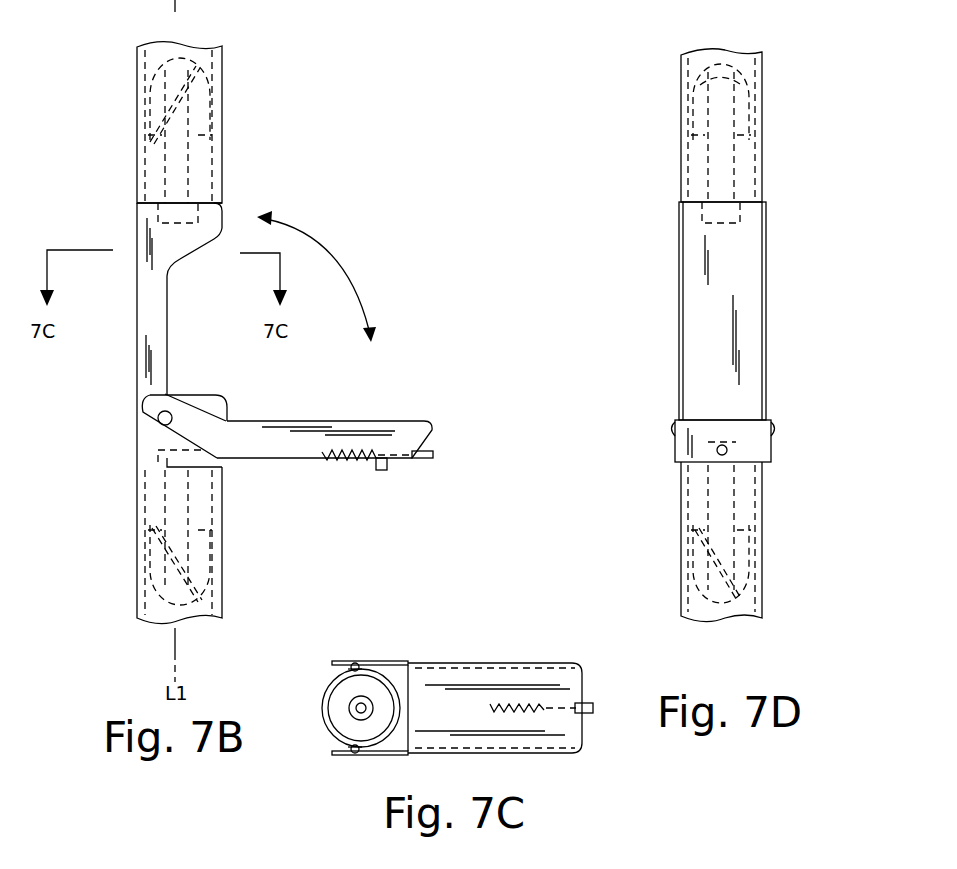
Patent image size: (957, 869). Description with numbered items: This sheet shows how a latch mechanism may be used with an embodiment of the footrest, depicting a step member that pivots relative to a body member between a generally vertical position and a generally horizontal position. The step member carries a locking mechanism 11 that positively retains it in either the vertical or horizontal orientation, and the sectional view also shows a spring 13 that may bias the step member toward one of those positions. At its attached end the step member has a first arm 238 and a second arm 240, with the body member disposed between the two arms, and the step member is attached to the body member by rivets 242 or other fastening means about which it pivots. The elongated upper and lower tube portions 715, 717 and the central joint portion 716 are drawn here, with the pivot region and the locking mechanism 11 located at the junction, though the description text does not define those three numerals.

In FIG. 7B, the locking mechanism 11 is at (446, 438).
In FIG. 7C, the locking mechanism 11 is at (605, 682).
In FIG. 7C, the spring 13 is at (350, 667).
In FIG. 7B, the first arm 238 is at (195, 410).
In FIG. 7C, the first arm 238 is at (375, 660).
In FIG. 7C, the second arm 240 is at (343, 757).
In FIG. 7B, the rivets 242 is at (158, 420).
In FIG. 7C, the rivets 242 is at (353, 660).
In FIG. 7B, the upper pole segment 715 is at (223, 97).
In FIG. 7D, the upper pole segment 715 is at (763, 128).
In FIG. 7B, the joint housing 716 is at (106, 228).
In FIG. 7D, the joint housing 716 is at (802, 280).
In FIG. 7B, the lower pole segment 717 is at (135, 530).
In FIG. 7D, the lower pole segment 717 is at (767, 492).